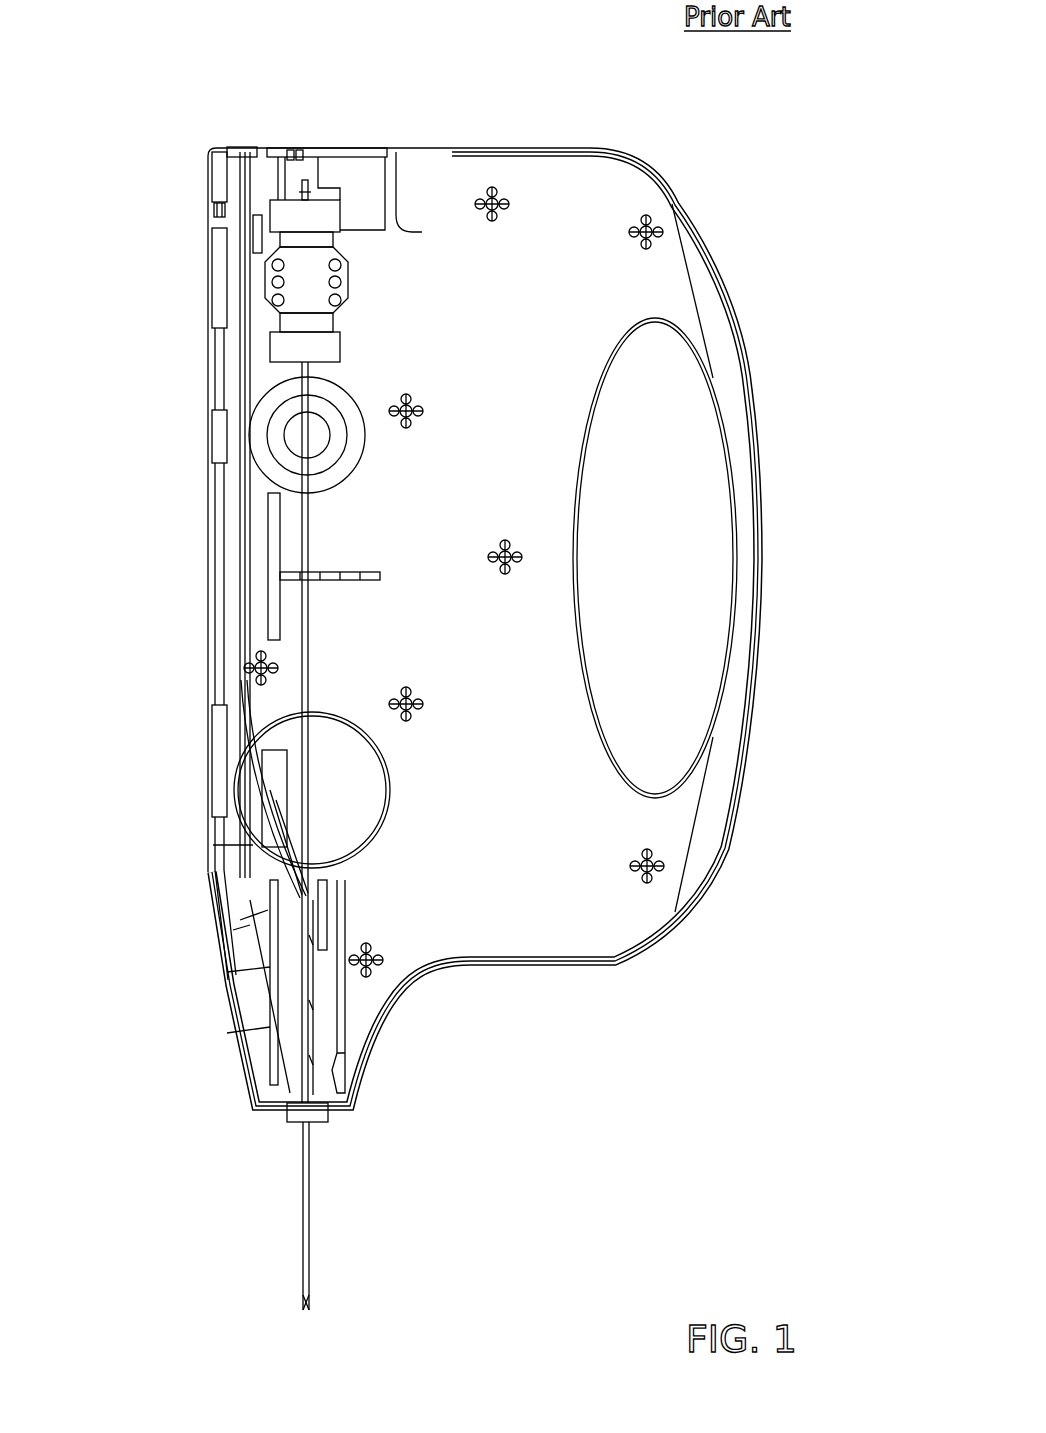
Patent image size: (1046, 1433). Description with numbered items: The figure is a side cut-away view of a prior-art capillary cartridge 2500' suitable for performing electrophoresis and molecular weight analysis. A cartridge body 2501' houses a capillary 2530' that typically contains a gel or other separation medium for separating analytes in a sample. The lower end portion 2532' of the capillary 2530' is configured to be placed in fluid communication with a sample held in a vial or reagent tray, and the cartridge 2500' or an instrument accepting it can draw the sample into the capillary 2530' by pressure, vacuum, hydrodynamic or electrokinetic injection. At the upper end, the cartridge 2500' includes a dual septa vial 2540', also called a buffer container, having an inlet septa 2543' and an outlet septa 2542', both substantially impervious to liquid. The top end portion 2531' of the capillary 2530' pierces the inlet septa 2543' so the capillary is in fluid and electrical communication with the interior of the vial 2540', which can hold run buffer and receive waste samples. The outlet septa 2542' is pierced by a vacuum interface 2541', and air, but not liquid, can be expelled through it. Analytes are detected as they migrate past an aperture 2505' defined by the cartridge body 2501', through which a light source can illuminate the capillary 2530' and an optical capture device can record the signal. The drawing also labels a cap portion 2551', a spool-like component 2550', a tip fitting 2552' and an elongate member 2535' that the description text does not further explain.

The capillary cartridge 2500' is at (465, 714).
The cartridge body 2501' is at (533, 627).
The top cap plate 2551' is at (229, 170).
The vacuum interface 2541' is at (191, 174).
The outlet septa 2542' is at (206, 219).
The dual septa vial 2540' is at (210, 289).
The inlet septa 2543' is at (206, 343).
The top end portion 2531' is at (218, 429).
The aperture 2505' is at (201, 435).
The capillary 2530' is at (226, 732).
The cable spool 2550' is at (231, 789).
The tip fitting 2552' is at (369, 1136).
The elongate member 2535' is at (372, 1216).
The end portion 2532' is at (372, 1331).